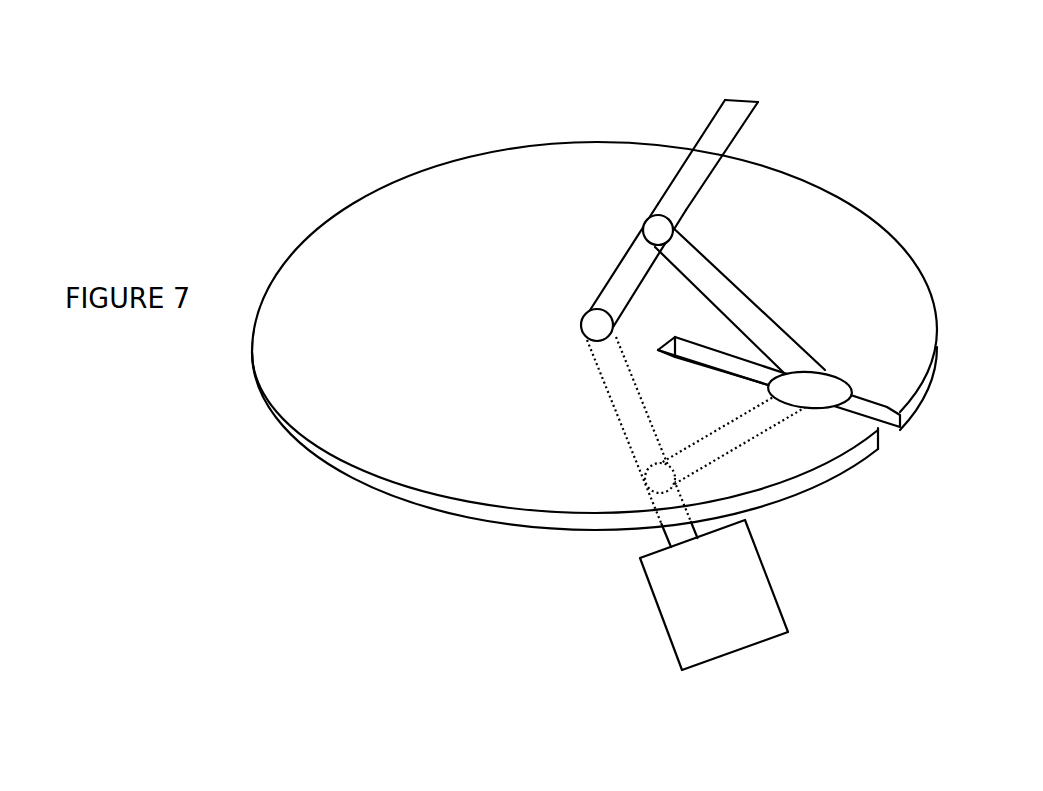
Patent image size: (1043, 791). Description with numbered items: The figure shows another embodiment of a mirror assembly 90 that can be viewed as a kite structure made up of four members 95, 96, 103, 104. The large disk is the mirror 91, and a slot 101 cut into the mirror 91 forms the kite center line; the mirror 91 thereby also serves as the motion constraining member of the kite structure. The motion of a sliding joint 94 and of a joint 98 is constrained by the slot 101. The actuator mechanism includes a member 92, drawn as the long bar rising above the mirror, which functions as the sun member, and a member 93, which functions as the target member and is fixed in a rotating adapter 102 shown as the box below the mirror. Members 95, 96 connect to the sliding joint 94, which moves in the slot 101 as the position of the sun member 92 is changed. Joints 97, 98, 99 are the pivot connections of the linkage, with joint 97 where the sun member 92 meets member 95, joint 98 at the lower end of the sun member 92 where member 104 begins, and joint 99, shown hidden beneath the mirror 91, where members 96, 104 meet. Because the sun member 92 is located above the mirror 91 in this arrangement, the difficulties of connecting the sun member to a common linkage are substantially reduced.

The mirror assembly 90 is at (237, 110).
The mirror 91 is at (917, 350).
The member (sun member) 92 is at (731, 135).
The member (target member) 93 is at (673, 535).
The sliding joint 94 is at (838, 388).
The member 95 is at (732, 292).
The member 96 is at (732, 435).
The joint 97 is at (644, 226).
The joint 98 is at (584, 313).
The joint 99 is at (650, 475).
The slot 101 is at (895, 437).
The rotating adapter 102 is at (767, 603).
The member 103 is at (630, 283).
The member 104 is at (607, 380).